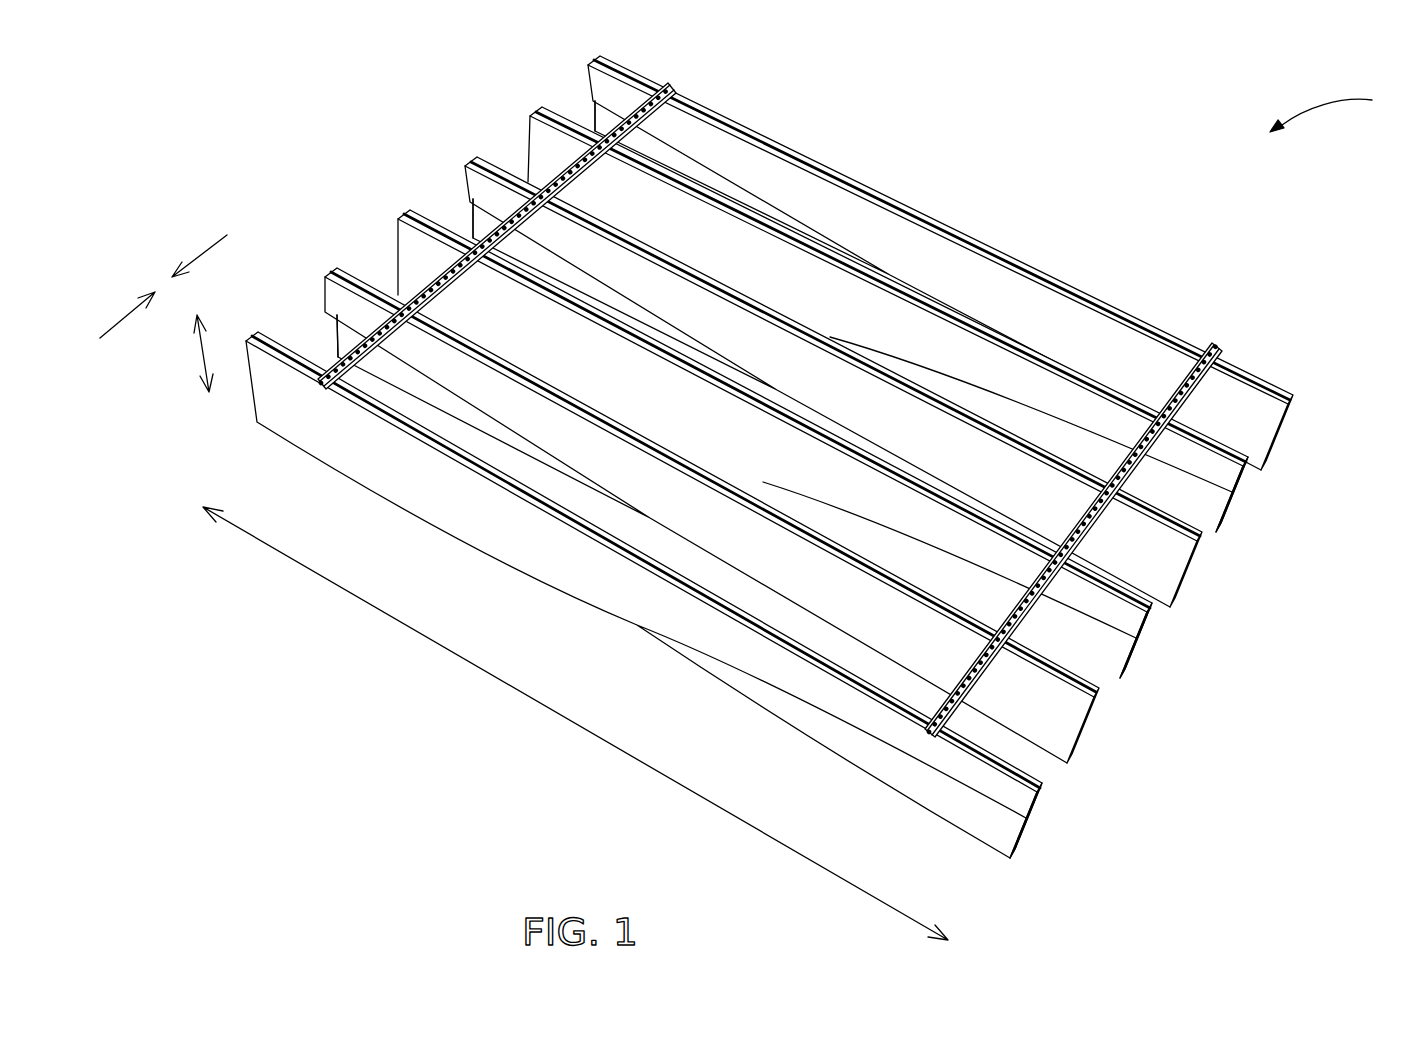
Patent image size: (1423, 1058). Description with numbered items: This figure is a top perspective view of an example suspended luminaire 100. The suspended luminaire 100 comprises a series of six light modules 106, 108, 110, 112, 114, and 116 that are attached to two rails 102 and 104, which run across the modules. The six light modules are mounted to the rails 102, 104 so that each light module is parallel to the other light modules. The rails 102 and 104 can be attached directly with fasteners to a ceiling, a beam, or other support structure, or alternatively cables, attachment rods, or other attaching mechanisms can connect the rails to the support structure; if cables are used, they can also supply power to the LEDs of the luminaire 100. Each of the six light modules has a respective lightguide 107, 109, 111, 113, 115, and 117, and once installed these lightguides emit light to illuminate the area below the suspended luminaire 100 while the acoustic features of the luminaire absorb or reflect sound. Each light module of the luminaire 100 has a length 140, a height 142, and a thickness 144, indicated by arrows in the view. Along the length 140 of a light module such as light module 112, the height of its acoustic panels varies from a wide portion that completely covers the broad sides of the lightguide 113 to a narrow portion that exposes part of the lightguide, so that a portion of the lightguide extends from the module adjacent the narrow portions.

The suspended luminaire 100 is at (1345, 110).
The rail 102 is at (678, 89).
The rail 104 is at (1215, 347).
The light module 106 is at (1240, 373).
The lightguide 107 is at (637, 138).
The light module 108 is at (1228, 513).
The lightguide 109 is at (1251, 478).
The light module 110 is at (1190, 580).
The lightguide 111 is at (520, 245).
The light module 112 is at (1128, 665).
The lightguide 113 is at (1152, 622).
The light module 114 is at (1076, 745).
The lightguide 115 is at (385, 365).
The light module 116 is at (1040, 800).
The lightguide 117 is at (1010, 838).
The length 140 is at (570, 726).
The height 142 is at (210, 365).
The thickness 144 is at (163, 283).